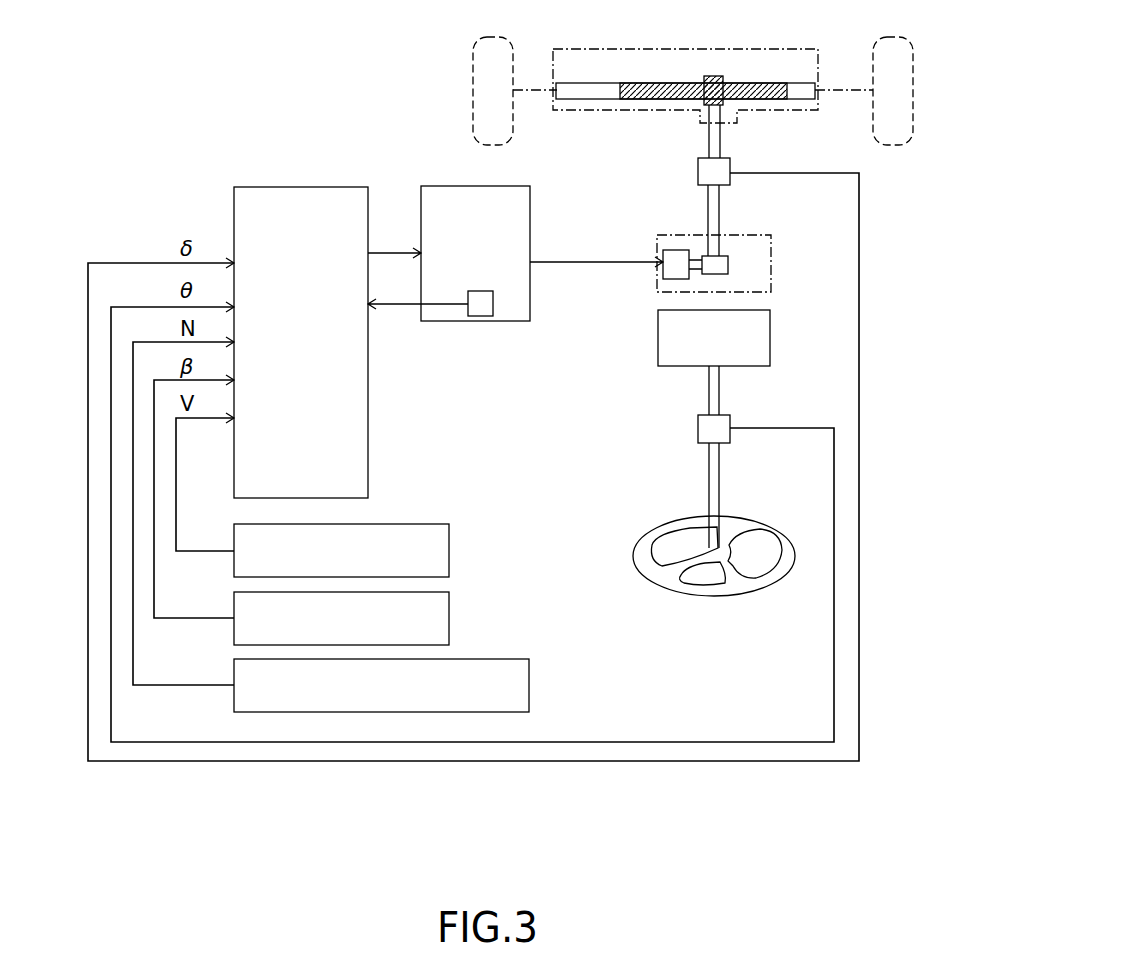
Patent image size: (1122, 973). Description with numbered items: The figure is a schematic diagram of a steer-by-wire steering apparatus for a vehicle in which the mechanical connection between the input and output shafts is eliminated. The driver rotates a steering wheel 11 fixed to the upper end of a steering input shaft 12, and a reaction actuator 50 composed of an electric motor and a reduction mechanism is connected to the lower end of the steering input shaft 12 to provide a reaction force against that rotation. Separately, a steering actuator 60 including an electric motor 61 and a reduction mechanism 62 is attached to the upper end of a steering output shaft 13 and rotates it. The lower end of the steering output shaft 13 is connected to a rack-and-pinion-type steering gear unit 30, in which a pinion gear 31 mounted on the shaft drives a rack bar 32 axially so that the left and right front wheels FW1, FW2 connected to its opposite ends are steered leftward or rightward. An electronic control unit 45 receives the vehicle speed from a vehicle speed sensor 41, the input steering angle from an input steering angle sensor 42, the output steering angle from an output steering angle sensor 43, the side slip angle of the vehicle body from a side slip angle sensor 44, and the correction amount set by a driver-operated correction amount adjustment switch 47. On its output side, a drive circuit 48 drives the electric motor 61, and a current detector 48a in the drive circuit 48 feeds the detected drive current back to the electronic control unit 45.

The steering wheel 11 is at (733, 590).
The steering input shaft 12 is at (720, 388).
The steering output shaft 13 is at (708, 206).
The steering gear unit 30 is at (685, 80).
The pinion gear 31 is at (722, 104).
The rack bar 32 is at (740, 83).
The vehicle speed sensor 41 is at (449, 551).
The input steering angle sensor 42 is at (698, 427).
The output steering angle sensor 43 is at (698, 172).
The side slip angle sensor 44 is at (449, 618).
The electronic control unit 45 is at (332, 187).
The correction amount adjustment switch 47 is at (529, 685).
The drive circuit 48 is at (462, 186).
The current detector 48a is at (493, 303).
The reaction actuator 50 is at (770, 342).
The steering actuator 60 is at (724, 260).
The electric motor 61 is at (666, 252).
The reduction mechanism 62 is at (728, 265).
The right front wheel FW1 is at (893, 37).
The left front wheel FW2 is at (493, 37).